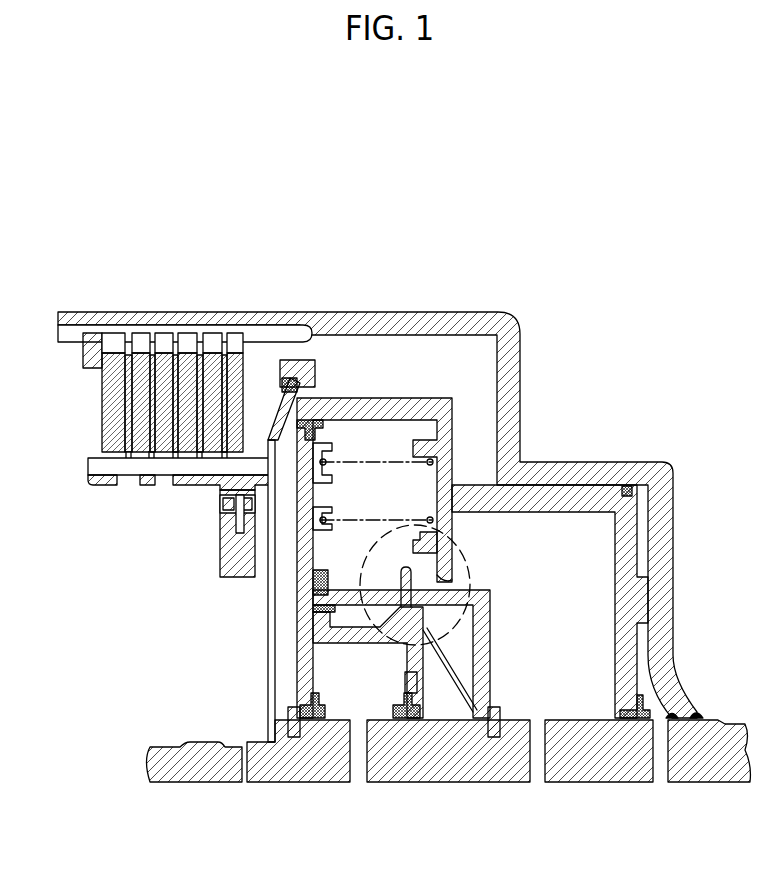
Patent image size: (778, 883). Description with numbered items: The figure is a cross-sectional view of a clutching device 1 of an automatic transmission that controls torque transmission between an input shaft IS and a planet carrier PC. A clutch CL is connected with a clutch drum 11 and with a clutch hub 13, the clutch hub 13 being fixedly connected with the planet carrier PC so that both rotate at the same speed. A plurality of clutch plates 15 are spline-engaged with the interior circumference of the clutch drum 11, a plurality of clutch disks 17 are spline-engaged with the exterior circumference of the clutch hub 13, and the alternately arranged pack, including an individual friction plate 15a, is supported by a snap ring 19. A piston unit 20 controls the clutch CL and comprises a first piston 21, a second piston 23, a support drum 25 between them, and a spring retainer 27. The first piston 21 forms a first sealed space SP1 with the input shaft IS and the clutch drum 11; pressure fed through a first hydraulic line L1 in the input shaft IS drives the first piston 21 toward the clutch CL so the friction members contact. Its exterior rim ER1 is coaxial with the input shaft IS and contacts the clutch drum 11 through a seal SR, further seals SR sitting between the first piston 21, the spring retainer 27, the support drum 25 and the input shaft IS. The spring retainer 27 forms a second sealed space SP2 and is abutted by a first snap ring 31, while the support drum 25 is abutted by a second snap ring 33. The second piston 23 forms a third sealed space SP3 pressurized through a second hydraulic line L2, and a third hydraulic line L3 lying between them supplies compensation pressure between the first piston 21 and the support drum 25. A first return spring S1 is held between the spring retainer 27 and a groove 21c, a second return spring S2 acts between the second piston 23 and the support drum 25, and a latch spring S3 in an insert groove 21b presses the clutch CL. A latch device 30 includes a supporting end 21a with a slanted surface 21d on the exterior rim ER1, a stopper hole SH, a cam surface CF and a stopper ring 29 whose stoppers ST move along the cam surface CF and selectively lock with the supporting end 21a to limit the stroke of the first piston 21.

The clutch device 1 is at (238, 228).
The clutch drum 11 is at (476, 312).
The clutch hub 13 is at (110, 482).
The clutch plates 15 is at (185, 360).
The friction plate 15a is at (113, 360).
The clutch disks 17 is at (151, 472).
The snap ring 19 is at (92, 345).
The piston unit 20 is at (470, 404).
The first piston 21 is at (550, 497).
The supporting end 21a is at (440, 545).
The insert groove 21b is at (300, 378).
The groove 21c is at (430, 490).
The slanted surface 21d is at (500, 590).
The second piston 23 is at (350, 642).
The support drum 25 is at (485, 675).
The spring retainer 27 is at (330, 598).
The stopper ring 29 is at (490, 612).
The latch device 30 is at (458, 630).
The first snap ring 31 is at (293, 738).
The second snap ring 33 is at (495, 738).
The clutch CL is at (72, 374).
The planet carrier PC is at (232, 559).
The seal SR is at (320, 420).
The first return spring S1 is at (385, 460).
The second return spring S2 is at (445, 720).
The latch spring S3 is at (288, 372).
The stopper ST is at (400, 568).
The stopper hole SH is at (455, 578).
The cam surface CF is at (372, 617).
The first sealed space SP1 is at (646, 684).
The second sealed space SP2 is at (592, 632).
The third sealed space SP3 is at (342, 693).
The exterior rim ER1 is at (595, 497).
The input shaft IS is at (465, 745).
The first hydraulic line L1 is at (660, 780).
The second hydraulic line L2 is at (355, 780).
The third hydraulic line L3 is at (538, 780).